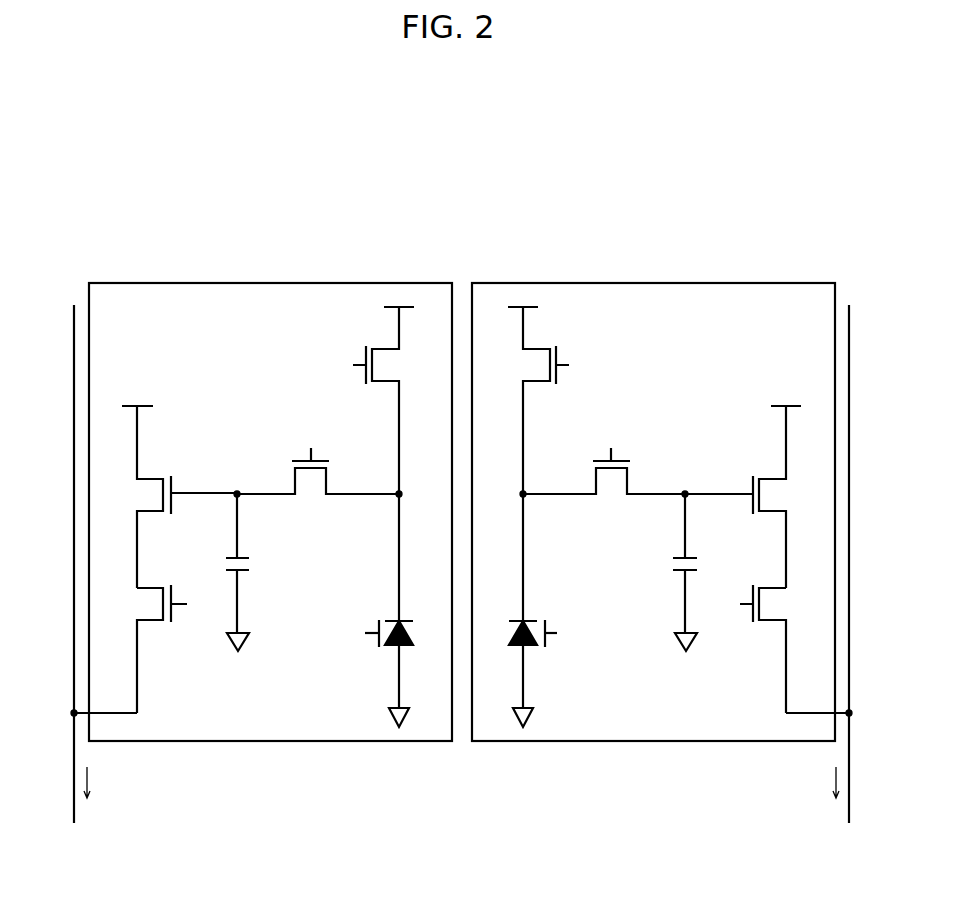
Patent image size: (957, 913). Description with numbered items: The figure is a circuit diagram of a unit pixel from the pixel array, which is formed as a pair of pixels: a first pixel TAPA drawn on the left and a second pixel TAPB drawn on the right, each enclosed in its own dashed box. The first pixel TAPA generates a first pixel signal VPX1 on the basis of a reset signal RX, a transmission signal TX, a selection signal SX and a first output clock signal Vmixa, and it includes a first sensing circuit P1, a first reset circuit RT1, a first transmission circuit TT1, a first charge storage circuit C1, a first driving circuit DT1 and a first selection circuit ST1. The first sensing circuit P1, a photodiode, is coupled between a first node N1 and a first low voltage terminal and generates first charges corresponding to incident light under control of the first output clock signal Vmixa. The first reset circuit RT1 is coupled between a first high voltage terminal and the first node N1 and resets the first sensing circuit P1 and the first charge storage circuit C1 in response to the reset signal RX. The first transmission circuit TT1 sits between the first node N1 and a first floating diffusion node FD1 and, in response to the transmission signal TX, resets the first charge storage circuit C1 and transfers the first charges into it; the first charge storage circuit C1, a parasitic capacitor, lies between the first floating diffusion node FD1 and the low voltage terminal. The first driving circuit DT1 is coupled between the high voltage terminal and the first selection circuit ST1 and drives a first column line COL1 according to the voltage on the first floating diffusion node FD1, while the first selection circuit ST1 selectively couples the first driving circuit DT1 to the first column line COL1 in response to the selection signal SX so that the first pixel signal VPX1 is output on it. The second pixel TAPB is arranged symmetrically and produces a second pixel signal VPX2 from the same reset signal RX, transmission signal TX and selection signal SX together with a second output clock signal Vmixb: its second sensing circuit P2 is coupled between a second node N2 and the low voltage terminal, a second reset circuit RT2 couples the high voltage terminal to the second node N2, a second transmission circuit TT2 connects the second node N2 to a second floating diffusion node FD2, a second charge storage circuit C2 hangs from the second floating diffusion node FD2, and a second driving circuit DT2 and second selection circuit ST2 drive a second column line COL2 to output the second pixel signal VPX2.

The first pixel TAPA is at (390, 283).
The second pixel TAPB is at (775, 283).
The first column line COL1 is at (72, 588).
The second column line COL2 is at (851, 588).
The first pixel signal VPX1 is at (108, 782).
The second pixel signal VPX2 is at (814, 782).
The first driving circuit DT1 is at (167, 497).
The second driving circuit DT2 is at (756, 497).
The first selection circuit ST1 is at (134, 649).
The second selection circuit ST2 is at (790, 649).
The selection signal SX is at (462, 604).
The reset signal RX is at (462, 365).
The first reset circuit RT1 is at (401, 464).
The second reset circuit RT2 is at (520, 464).
The transmission signal TX is at (461, 438).
The first transmission circuit TT1 is at (318, 492).
The second transmission circuit TT2 is at (604, 492).
The first floating diffusion node FD1 is at (238, 480).
The second floating diffusion node FD2 is at (684, 480).
The first charge storage circuit C1 is at (229, 572).
The second charge storage circuit C2 is at (693, 572).
The first node N1 is at (386, 480).
The second node N2 is at (537, 480).
The first sensing circuit P1 is at (405, 657).
The second sensing circuit P2 is at (518, 657).
The first output clock signal Vmixa is at (345, 635).
The second output clock signal Vmixb is at (577, 635).